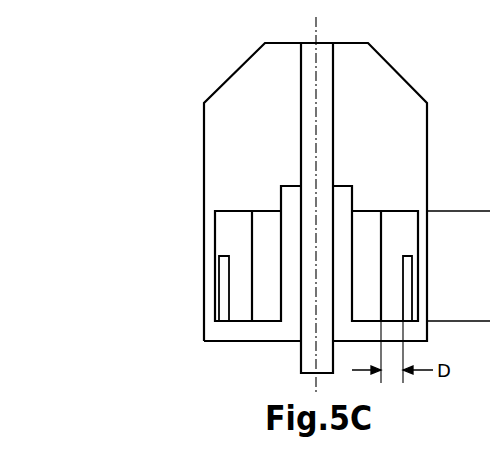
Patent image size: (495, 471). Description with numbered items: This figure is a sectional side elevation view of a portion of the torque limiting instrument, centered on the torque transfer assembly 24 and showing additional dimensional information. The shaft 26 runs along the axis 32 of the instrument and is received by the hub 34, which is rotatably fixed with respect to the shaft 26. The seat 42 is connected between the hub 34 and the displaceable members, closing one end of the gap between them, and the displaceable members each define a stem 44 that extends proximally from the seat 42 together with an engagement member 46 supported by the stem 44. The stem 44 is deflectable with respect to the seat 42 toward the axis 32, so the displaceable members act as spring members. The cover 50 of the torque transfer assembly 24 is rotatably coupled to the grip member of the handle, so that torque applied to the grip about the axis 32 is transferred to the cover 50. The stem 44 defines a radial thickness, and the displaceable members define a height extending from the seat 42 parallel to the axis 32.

The torque transfer assembly 24 is at (225, 342).
The shaft 26 is at (327, 128).
The axis 32 is at (316, 27).
The hub 34 is at (352, 198).
The seat 42 is at (262, 342).
The stem 44 is at (235, 286).
The engagement member 46 is at (215, 223).
The cover 50 is at (204, 247).